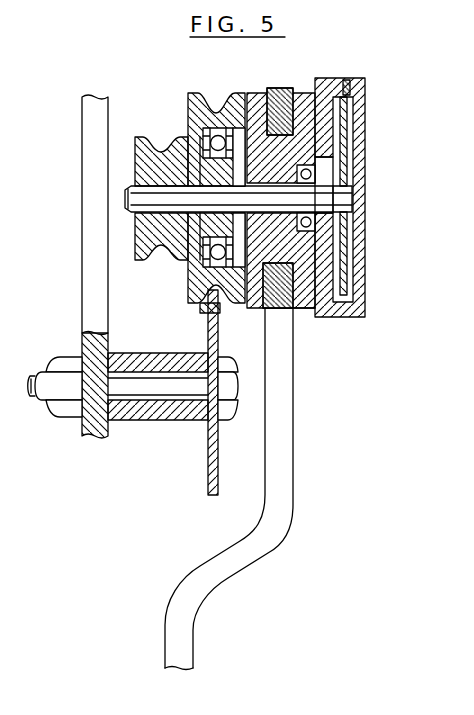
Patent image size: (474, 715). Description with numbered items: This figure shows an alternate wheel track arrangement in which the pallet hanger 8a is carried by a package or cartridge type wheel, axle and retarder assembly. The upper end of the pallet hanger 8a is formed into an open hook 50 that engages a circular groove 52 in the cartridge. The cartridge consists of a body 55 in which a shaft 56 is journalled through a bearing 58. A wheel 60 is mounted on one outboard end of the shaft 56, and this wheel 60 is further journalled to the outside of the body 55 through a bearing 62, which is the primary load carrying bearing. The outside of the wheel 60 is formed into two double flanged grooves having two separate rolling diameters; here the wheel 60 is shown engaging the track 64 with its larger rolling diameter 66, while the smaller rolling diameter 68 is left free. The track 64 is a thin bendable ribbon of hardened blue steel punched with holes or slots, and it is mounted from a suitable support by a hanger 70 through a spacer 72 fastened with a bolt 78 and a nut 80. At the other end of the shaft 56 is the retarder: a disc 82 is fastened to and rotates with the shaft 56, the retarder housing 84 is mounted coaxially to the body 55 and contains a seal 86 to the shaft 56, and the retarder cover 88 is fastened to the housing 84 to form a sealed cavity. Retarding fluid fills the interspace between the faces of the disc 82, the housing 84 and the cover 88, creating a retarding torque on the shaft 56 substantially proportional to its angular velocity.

The open hook 50 is at (300, 88).
The circular groove 52 is at (283, 88).
The body 55 is at (303, 310).
The shaft 56 is at (140, 198).
The bearing 58 is at (347, 162).
The wheel 60 is at (204, 92).
The bearing 62 is at (198, 141).
The track 64 is at (208, 331).
The larger rolling diameter 66 is at (226, 303).
The smaller rolling diameter 68 is at (158, 248).
The hanger 70 is at (83, 312).
The spacer 72 is at (174, 421).
The bolt 78 is at (231, 421).
The nut 80 is at (58, 420).
The disc 82 is at (348, 250).
The retarder housing 84 is at (348, 82).
The seal 86 is at (355, 184).
The retarder cover 88 is at (365, 293).
The pallet hanger 8a is at (295, 505).